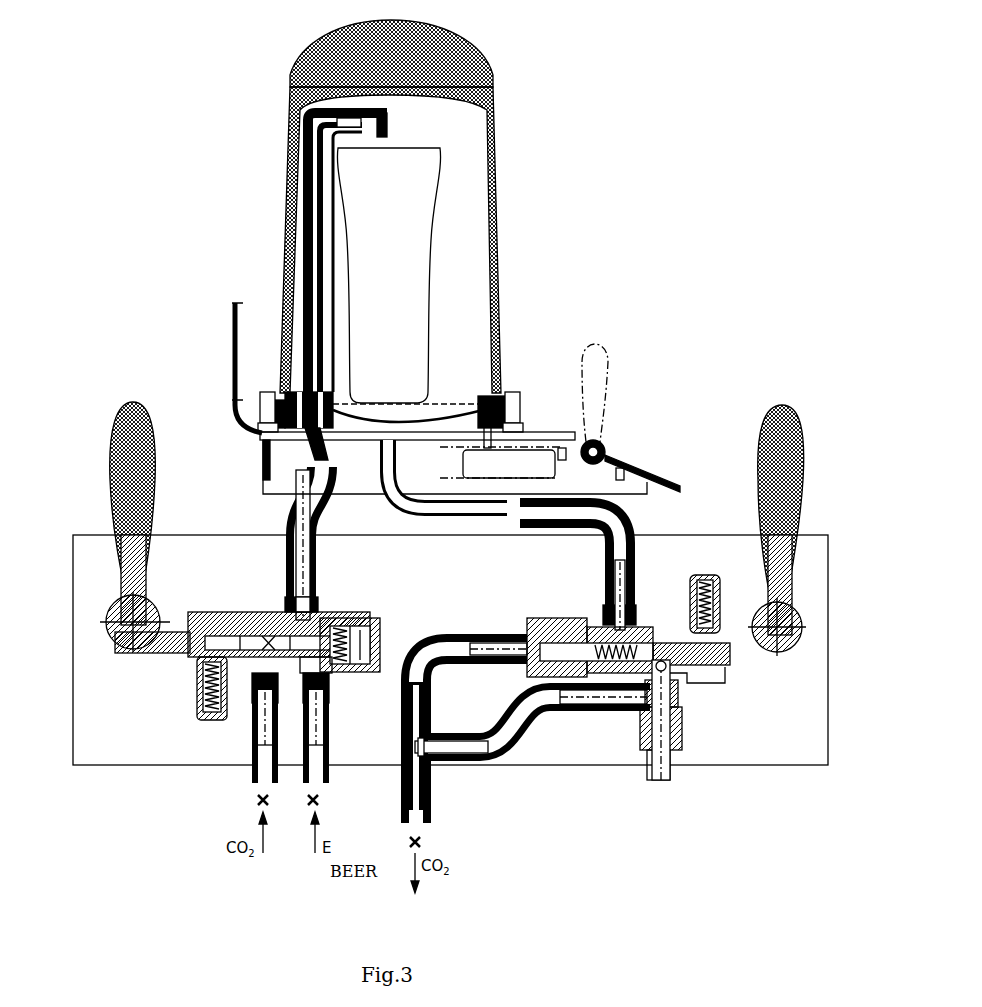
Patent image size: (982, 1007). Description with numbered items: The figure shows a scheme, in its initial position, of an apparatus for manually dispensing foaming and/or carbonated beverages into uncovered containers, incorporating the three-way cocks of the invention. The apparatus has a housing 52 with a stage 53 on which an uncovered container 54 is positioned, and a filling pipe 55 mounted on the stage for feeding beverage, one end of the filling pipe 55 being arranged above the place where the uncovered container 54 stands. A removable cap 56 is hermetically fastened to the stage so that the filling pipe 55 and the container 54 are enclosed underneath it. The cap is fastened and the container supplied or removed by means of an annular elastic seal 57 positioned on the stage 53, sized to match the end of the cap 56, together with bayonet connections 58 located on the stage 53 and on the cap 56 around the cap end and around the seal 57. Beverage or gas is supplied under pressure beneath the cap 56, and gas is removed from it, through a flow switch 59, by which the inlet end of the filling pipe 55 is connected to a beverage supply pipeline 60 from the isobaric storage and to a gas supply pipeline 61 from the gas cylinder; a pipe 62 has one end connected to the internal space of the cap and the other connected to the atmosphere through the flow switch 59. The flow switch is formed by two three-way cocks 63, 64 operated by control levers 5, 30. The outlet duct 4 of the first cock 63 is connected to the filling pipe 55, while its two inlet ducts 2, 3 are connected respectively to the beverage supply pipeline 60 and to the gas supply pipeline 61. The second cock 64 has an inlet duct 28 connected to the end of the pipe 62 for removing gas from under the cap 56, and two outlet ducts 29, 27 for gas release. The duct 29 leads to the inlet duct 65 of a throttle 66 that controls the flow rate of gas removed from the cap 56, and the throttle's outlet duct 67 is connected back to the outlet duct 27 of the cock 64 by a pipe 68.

The inlet duct 2 is at (252, 692).
The inlet duct 3 is at (327, 682).
The outlet duct 4 is at (303, 597).
The control lever 5 is at (118, 425).
The outlet duct 27 is at (455, 650).
The inlet duct 28 is at (633, 600).
The outlet duct 29 is at (670, 670).
The control lever 30 is at (772, 450).
The housing 52 is at (628, 490).
The stage 53 is at (465, 403).
The uncovered container 54 is at (437, 253).
The filling pipe 55 is at (310, 172).
The cap 56 is at (483, 158).
The annular elastic seal 57 is at (288, 413).
The bayonet connections 58 is at (272, 392).
The flow switch 59 is at (805, 757).
The beverage supply pipeline 60 is at (330, 777).
The gas supply pipeline 61 is at (252, 777).
The pipe 62 is at (387, 473).
The three-way cock 63 is at (337, 610).
The three-way cock 64 is at (578, 623).
The inlet duct 65 is at (670, 698).
The throttle 66 is at (680, 747).
The outlet duct 67 is at (647, 707).
The pipe 68 is at (488, 743).